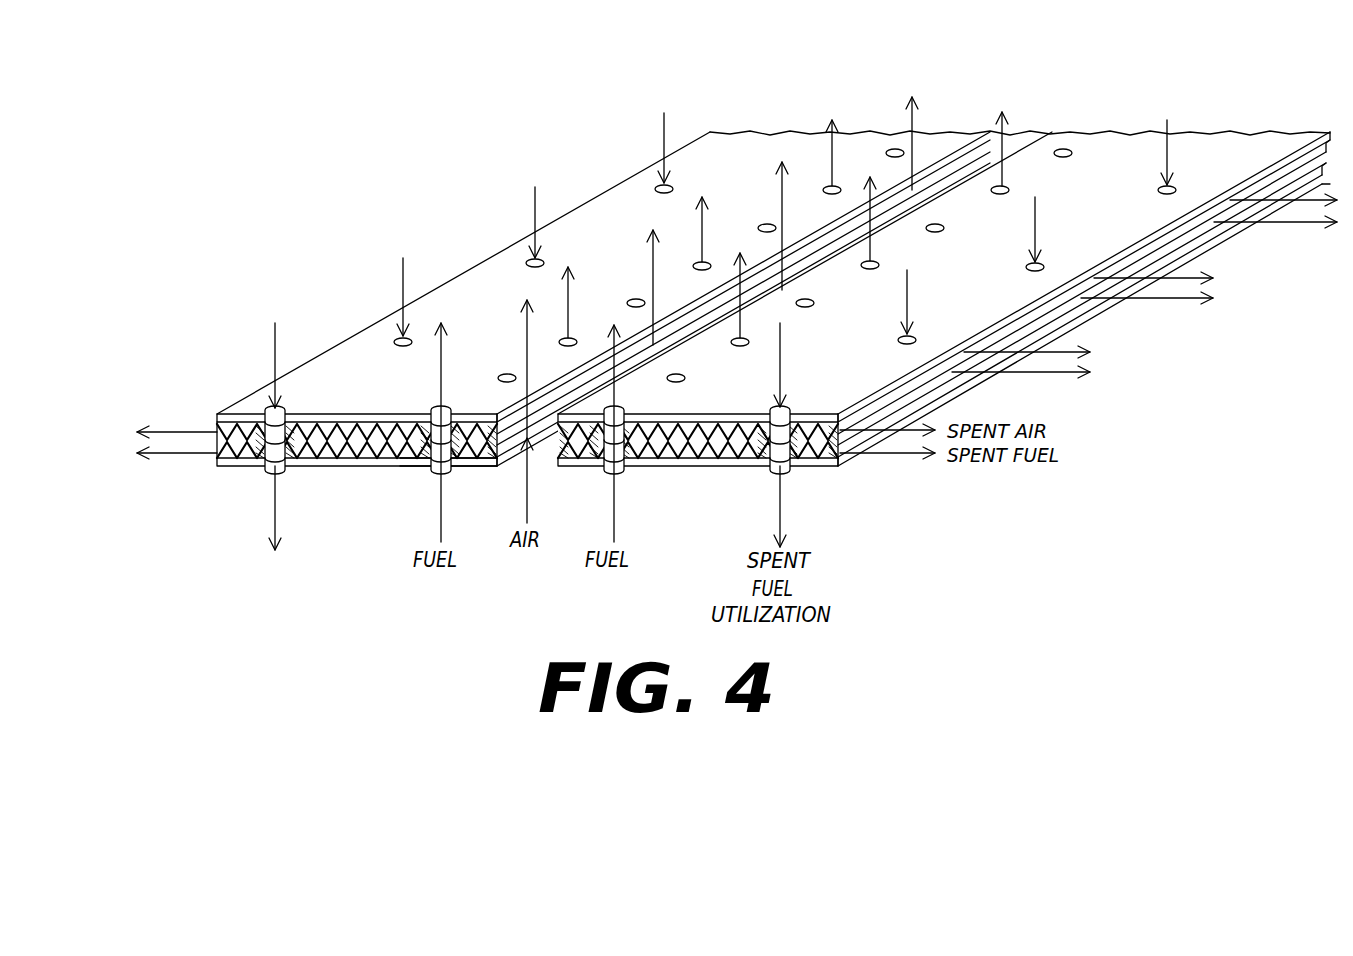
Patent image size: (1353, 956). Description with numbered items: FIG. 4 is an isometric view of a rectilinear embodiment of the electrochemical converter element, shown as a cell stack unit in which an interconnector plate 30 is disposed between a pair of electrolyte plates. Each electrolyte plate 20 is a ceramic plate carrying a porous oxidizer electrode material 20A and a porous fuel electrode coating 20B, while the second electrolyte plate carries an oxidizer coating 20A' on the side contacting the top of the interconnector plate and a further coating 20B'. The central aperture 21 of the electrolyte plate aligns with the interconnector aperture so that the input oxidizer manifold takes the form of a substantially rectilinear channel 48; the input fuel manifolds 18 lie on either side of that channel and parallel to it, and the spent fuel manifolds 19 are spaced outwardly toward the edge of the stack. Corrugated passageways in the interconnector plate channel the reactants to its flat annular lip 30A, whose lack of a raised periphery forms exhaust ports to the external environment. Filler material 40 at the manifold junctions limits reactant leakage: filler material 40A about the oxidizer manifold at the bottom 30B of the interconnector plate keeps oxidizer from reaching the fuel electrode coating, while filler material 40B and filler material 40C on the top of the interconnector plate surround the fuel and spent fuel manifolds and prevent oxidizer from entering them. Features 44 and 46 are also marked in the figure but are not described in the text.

The input fuel manifold 18 is at (444, 471).
The spent fuel manifold 19 is at (268, 408).
The electrolyte plate 20 is at (457, 273).
The oxidizer electrode material 20A is at (345, 487).
The oxidizer coating 20A' is at (357, 402).
The fuel electrode coating 20B is at (603, 485).
The oxidizer coating 20B' is at (698, 310).
The central aperture 21 is at (540, 460).
The interconnector plate 30 is at (217, 430).
The flat annular lip 30A is at (1080, 316).
The bottom of the interconnector plate 30B is at (217, 460).
The filler material 40 is at (486, 466).
The filler material 40A is at (566, 466).
The filler material 40B is at (656, 466).
The filler material 40C is at (293, 466).
The plate module top surface 44 is at (886, 413).
The spent gas exit passage 46 is at (266, 522).
The rectilinear channel 48 is at (1013, 142).